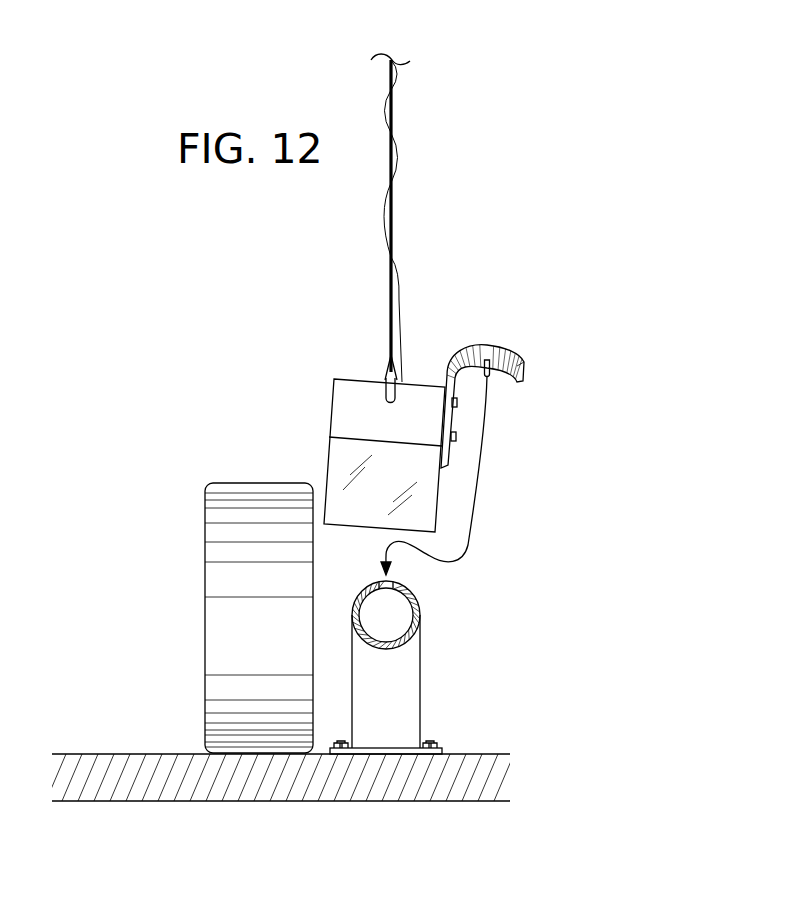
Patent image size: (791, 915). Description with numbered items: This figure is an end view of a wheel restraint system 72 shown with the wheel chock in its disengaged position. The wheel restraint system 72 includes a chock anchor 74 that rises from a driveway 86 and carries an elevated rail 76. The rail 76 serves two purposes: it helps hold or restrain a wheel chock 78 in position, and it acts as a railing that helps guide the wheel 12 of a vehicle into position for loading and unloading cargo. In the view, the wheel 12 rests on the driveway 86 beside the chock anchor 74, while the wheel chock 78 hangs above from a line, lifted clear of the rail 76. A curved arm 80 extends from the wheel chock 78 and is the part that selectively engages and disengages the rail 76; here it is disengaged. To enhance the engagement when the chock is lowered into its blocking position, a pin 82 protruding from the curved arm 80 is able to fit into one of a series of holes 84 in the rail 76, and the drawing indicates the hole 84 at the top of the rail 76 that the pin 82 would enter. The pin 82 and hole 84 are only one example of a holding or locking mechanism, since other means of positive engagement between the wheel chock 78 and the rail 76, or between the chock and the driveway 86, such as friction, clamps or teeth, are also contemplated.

The wheel 12 is at (203, 642).
The wheel restraint system 72 is at (565, 278).
The chock anchor 74 is at (420, 663).
The rail 76 is at (390, 645).
The wheel chock 78 is at (330, 405).
The curved arm 80 is at (479, 345).
The pin 82 is at (492, 375).
The hole 84 is at (387, 588).
The driveway 86 is at (122, 753).